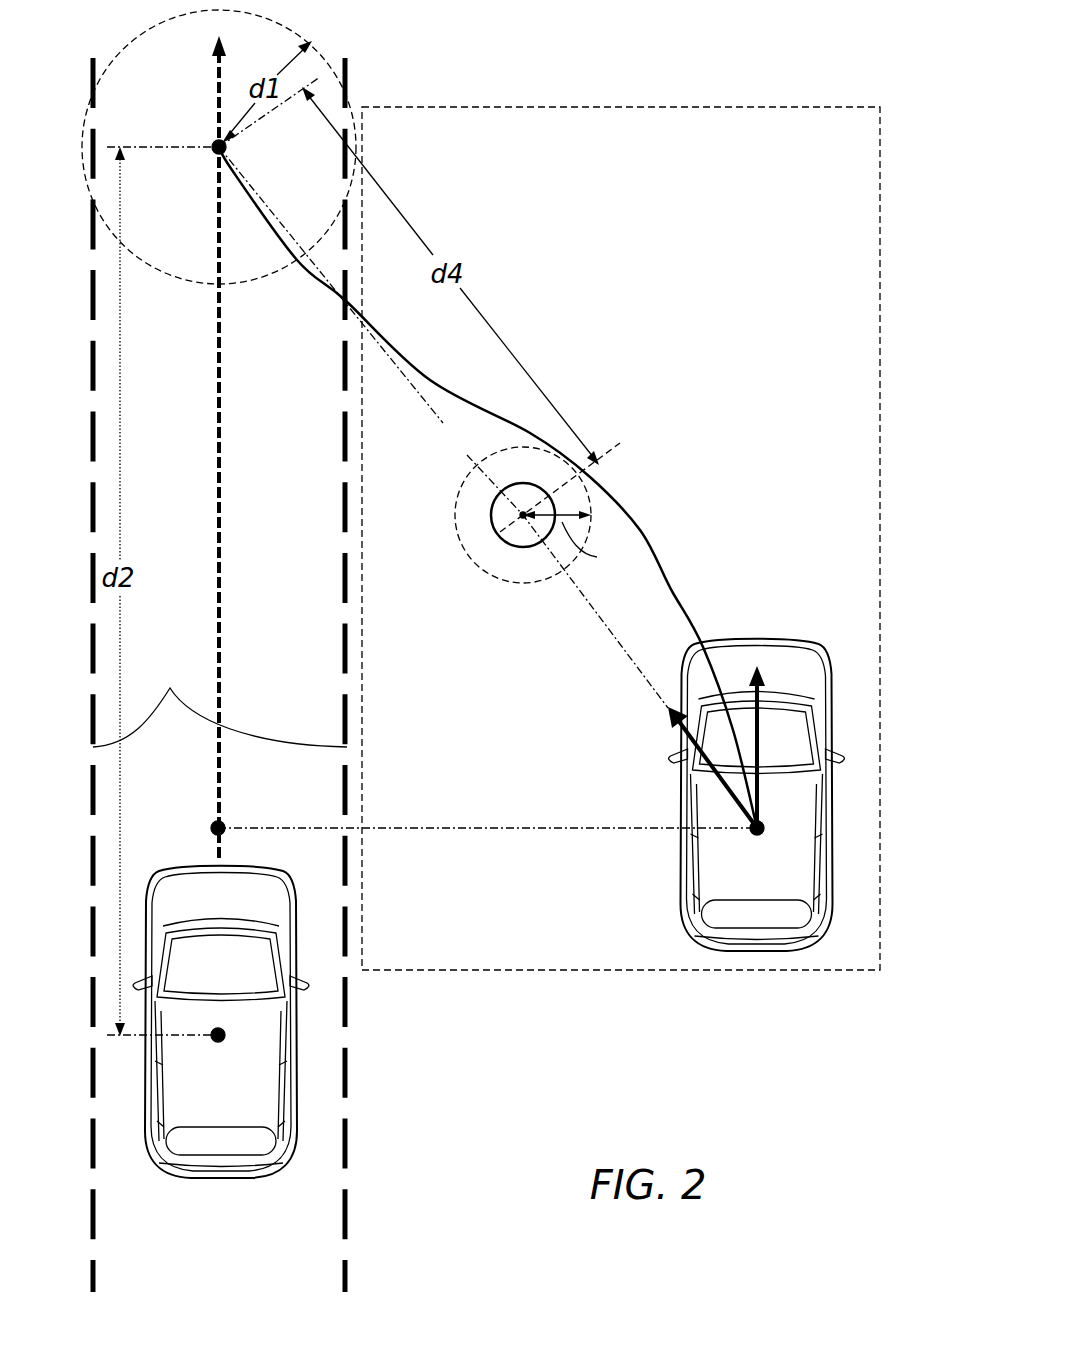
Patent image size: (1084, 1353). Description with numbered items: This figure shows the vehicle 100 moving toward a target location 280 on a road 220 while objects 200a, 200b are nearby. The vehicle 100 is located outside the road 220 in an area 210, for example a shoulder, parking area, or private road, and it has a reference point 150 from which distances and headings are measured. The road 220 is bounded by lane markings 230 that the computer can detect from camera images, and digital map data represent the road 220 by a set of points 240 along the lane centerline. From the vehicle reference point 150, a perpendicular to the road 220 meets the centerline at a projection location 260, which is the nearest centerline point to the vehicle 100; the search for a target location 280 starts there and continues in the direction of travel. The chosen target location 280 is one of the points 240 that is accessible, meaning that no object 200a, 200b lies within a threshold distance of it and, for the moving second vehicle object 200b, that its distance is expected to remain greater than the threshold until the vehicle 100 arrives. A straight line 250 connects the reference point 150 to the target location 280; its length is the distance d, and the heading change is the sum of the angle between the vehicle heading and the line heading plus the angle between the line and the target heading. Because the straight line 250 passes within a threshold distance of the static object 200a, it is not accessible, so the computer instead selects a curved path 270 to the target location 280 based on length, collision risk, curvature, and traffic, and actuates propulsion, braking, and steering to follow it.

The vehicle 100 is at (749, 884).
The reference point 150 is at (752, 833).
The static object 200a is at (507, 547).
The second vehicle object 200b is at (210, 922).
The area 210 is at (848, 106).
The road 220 is at (211, 1258).
The lane markings 230 is at (220, 701).
The points 240 is at (232, 368).
The straight line 250 is at (605, 632).
The projection location 260 is at (211, 826).
The path 270 is at (638, 528).
The target location 280 is at (216, 153).